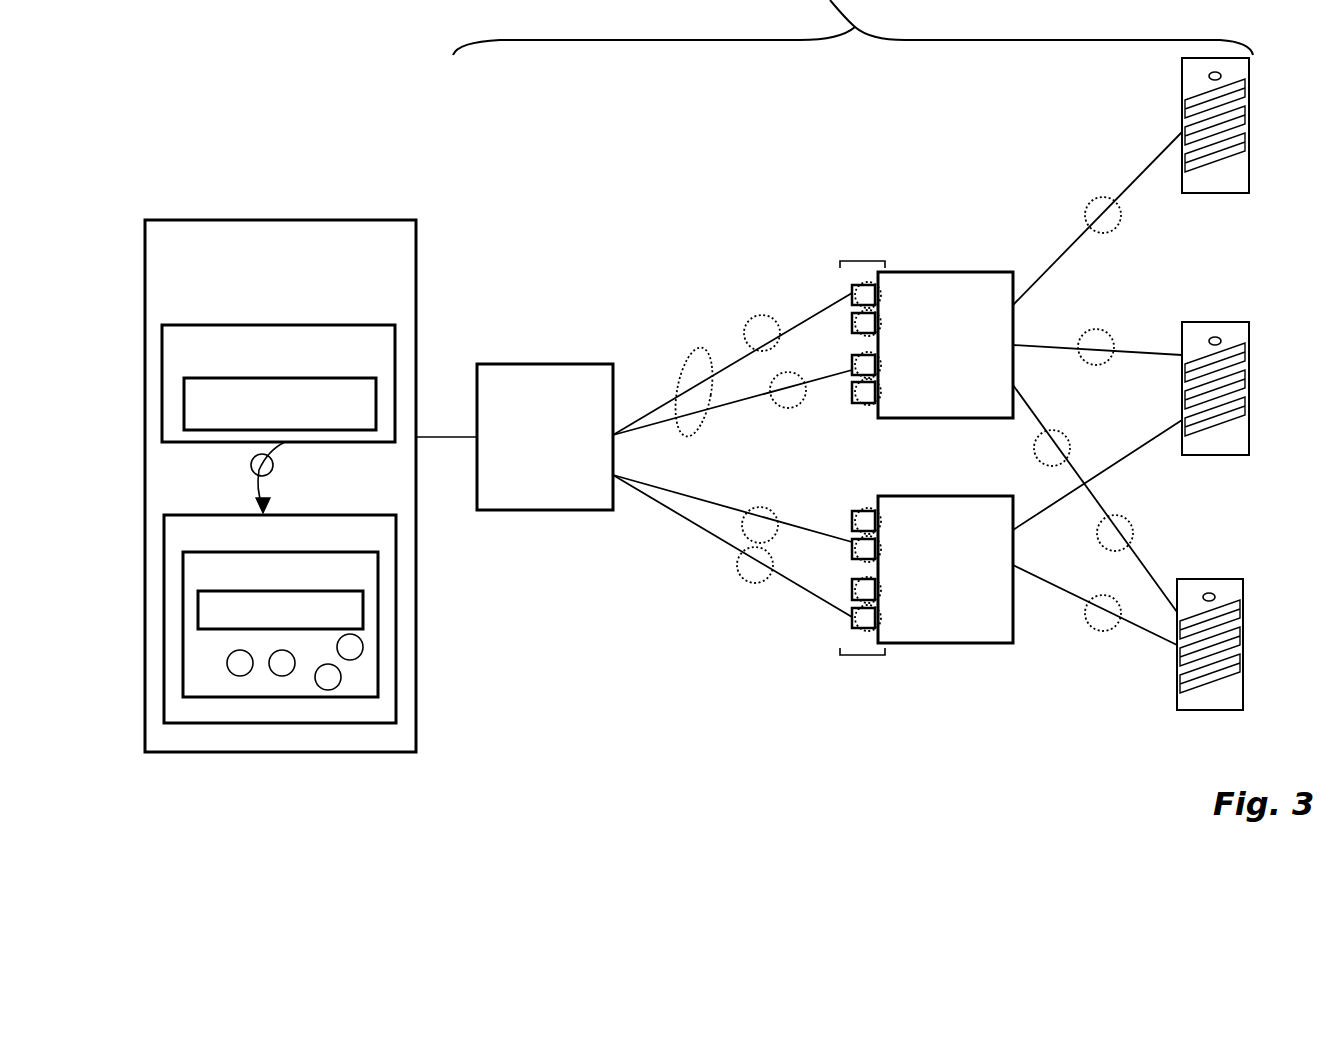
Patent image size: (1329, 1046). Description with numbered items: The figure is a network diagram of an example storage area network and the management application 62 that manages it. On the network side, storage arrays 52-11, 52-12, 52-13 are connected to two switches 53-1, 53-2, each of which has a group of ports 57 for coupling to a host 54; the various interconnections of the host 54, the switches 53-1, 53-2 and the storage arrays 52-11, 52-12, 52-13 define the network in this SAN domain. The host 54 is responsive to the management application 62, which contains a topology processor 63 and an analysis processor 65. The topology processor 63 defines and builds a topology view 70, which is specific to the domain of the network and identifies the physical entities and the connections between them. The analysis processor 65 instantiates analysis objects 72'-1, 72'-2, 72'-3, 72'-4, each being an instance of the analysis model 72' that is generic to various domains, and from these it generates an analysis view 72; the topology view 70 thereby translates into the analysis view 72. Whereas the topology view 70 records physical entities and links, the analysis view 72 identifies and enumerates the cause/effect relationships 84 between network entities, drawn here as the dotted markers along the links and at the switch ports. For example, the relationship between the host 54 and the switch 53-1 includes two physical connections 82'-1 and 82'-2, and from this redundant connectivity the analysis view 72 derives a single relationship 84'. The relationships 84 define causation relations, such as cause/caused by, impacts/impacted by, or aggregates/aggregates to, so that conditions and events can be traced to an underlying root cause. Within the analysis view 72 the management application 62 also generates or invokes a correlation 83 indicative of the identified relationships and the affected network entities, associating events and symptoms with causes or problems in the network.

The management application 62 is at (416, 218).
The topology processor 63 is at (338, 325).
The topology view 70 is at (373, 378).
The analysis processor 65 is at (393, 515).
The analysis object 72' is at (288, 477).
The analysis view 72 is at (334, 624).
The correlation 83 is at (363, 610).
The analysis object 72'-1 is at (207, 733).
The analysis object 72'-2 is at (252, 721).
The analysis object 72'-3 is at (308, 740).
The analysis object 72'-4 is at (404, 674).
The host 54 is at (545, 512).
The relationship 84' is at (668, 361).
The cause/effect relationship 84 is at (935, 420).
The physical connection 82'-1 is at (732, 347).
The physical connection 82'-2 is at (732, 419).
The switch 53-1 is at (945, 272).
The switch 53-2 is at (978, 645).
The ports 57 is at (862, 258).
The storage array 52-11 is at (1182, 92).
The storage array 52-12 is at (1199, 322).
The storage array 52-13 is at (1178, 692).